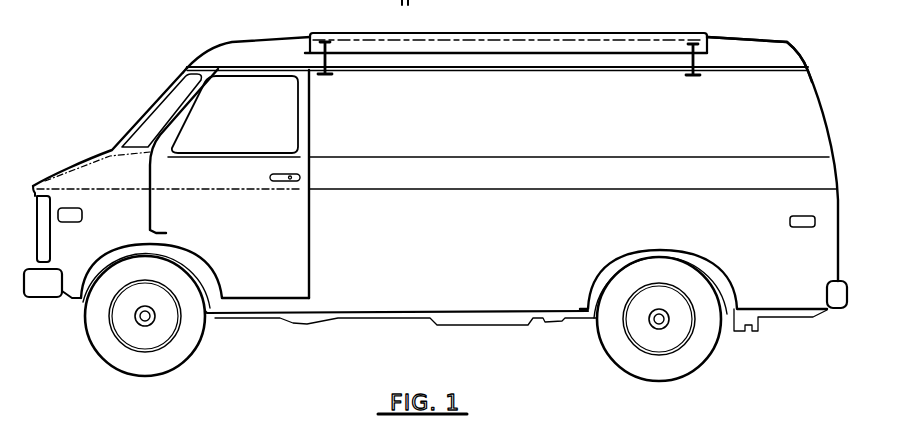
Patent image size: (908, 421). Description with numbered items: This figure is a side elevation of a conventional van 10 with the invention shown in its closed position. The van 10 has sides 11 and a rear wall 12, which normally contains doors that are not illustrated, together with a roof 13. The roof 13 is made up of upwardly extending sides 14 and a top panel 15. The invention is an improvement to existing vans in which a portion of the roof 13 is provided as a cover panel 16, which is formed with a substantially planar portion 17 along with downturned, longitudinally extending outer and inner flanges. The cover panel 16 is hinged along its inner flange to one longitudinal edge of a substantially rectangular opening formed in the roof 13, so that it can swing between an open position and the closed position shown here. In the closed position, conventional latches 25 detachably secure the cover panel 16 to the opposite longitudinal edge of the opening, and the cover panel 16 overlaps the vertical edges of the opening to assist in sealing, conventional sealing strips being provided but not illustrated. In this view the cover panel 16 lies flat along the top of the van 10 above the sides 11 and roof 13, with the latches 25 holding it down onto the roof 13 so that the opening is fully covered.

The van 10 is at (845, 173).
The sides 11 is at (806, 137).
The rear wall 12 is at (838, 232).
The roof 13 is at (793, 61).
The upwardly extending sides 14 is at (790, 43).
The top panel 15 is at (727, 35).
The cover panel 16 is at (658, 31).
The substantially planar portion 17 is at (612, 33).
The latches 25 is at (327, 76).